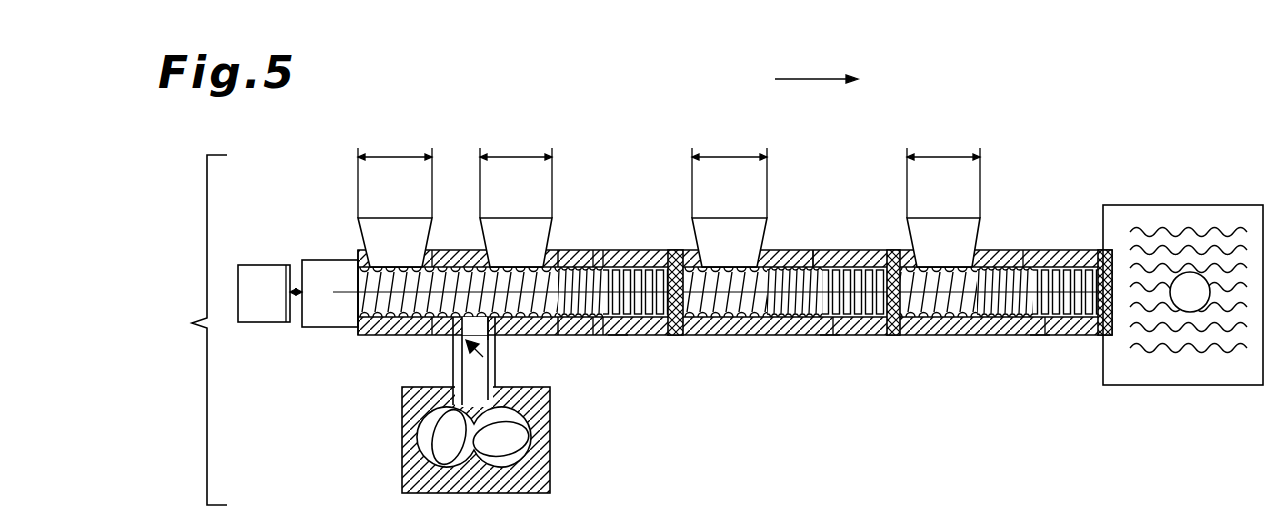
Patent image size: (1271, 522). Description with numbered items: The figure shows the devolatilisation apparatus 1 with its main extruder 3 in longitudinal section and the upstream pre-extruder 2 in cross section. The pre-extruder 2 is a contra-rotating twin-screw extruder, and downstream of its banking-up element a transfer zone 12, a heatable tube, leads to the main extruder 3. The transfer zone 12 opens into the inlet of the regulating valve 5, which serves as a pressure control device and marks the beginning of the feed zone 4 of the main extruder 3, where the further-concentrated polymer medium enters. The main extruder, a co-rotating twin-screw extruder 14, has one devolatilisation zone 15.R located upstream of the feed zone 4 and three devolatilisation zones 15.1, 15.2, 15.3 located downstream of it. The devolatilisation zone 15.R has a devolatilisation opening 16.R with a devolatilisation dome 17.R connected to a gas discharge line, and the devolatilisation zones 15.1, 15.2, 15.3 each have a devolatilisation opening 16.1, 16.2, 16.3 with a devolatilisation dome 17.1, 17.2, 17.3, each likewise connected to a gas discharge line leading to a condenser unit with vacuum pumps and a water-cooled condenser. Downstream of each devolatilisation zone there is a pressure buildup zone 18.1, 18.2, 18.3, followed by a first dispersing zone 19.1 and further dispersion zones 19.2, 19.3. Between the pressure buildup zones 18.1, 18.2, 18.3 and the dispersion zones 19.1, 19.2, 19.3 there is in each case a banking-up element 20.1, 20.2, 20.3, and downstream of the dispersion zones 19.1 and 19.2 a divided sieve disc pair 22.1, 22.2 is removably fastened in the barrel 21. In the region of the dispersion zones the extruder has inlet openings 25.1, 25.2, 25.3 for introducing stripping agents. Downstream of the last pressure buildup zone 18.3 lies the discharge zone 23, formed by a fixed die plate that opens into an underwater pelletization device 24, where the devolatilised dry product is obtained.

The devolatilisation apparatus 1 is at (200, 330).
The pre-extruder 2 is at (550, 468).
The main extruder 3 is at (1053, 266).
The feed zone 4 is at (490, 340).
The regulating valve 5 is at (455, 356).
The transfer zone 12 is at (490, 385).
The extruder 14 is at (816, 68).
The devolatilisation zone 15.R is at (392, 172).
The devolatilisation zone 15.1 is at (516, 172).
The devolatilisation zone 15.2 is at (729, 172).
The devolatilisation zone 15.3 is at (943, 172).
The devolatilisation opening 16.R is at (378, 266).
The devolatilisation opening 16.1 is at (492, 266).
The devolatilisation opening 16.2 is at (743, 266).
The devolatilisation opening 16.3 is at (955, 266).
The devolatilisation dome 17.R is at (400, 225).
The devolatilisation dome 17.1 is at (523, 225).
The devolatilisation dome 17.2 is at (735, 225).
The devolatilisation dome 17.3 is at (950, 225).
The pressure buildup zone 18.1 is at (603, 157).
The pressure buildup zone 18.2 is at (808, 343).
The pressure buildup zone 18.3 is at (1025, 343).
The first dispersing zone 19.1 is at (668, 157).
The dispersion zone 19.2 is at (883, 343).
The dispersion zone 19.3 is at (1097, 343).
The banking-up element 20.1 is at (593, 250).
The banking-up element 20.2 is at (810, 266).
The banking-up element 20.3 is at (1023, 266).
The barrel 21 is at (372, 338).
The divided sieve disc pair 22.1 is at (677, 337).
The divided sieve disc pair 22.2 is at (892, 337).
The discharge zone 23 is at (1100, 262).
The underwater pelletization device 24 is at (1200, 210).
The inlet opening 25.1 is at (617, 337).
The inlet opening 25.2 is at (830, 337).
The inlet opening 25.3 is at (1040, 337).